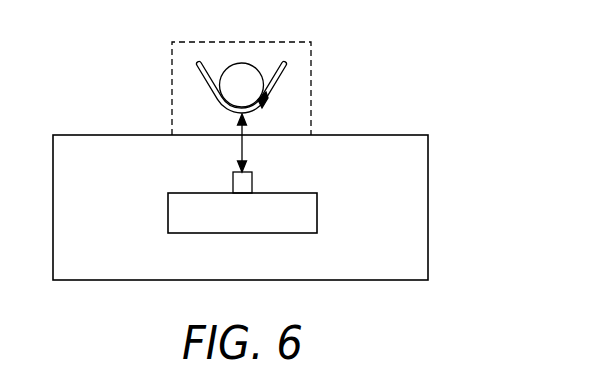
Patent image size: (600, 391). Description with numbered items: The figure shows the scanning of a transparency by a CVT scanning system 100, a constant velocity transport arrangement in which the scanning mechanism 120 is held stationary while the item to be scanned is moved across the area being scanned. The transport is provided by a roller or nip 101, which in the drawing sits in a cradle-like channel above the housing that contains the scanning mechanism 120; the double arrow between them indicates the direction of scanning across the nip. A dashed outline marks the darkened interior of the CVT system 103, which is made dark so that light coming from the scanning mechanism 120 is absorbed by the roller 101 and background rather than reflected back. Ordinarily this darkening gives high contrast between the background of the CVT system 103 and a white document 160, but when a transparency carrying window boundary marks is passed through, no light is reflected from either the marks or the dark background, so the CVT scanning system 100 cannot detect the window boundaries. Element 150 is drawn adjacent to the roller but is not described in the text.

The CVT scanning system 100 is at (405, 133).
The roller or nip 101 is at (240, 66).
The CVT system 103 is at (313, 53).
The scanning mechanism 120 is at (317, 215).
The sensor 150 is at (262, 107).
The document 160 is at (278, 80).